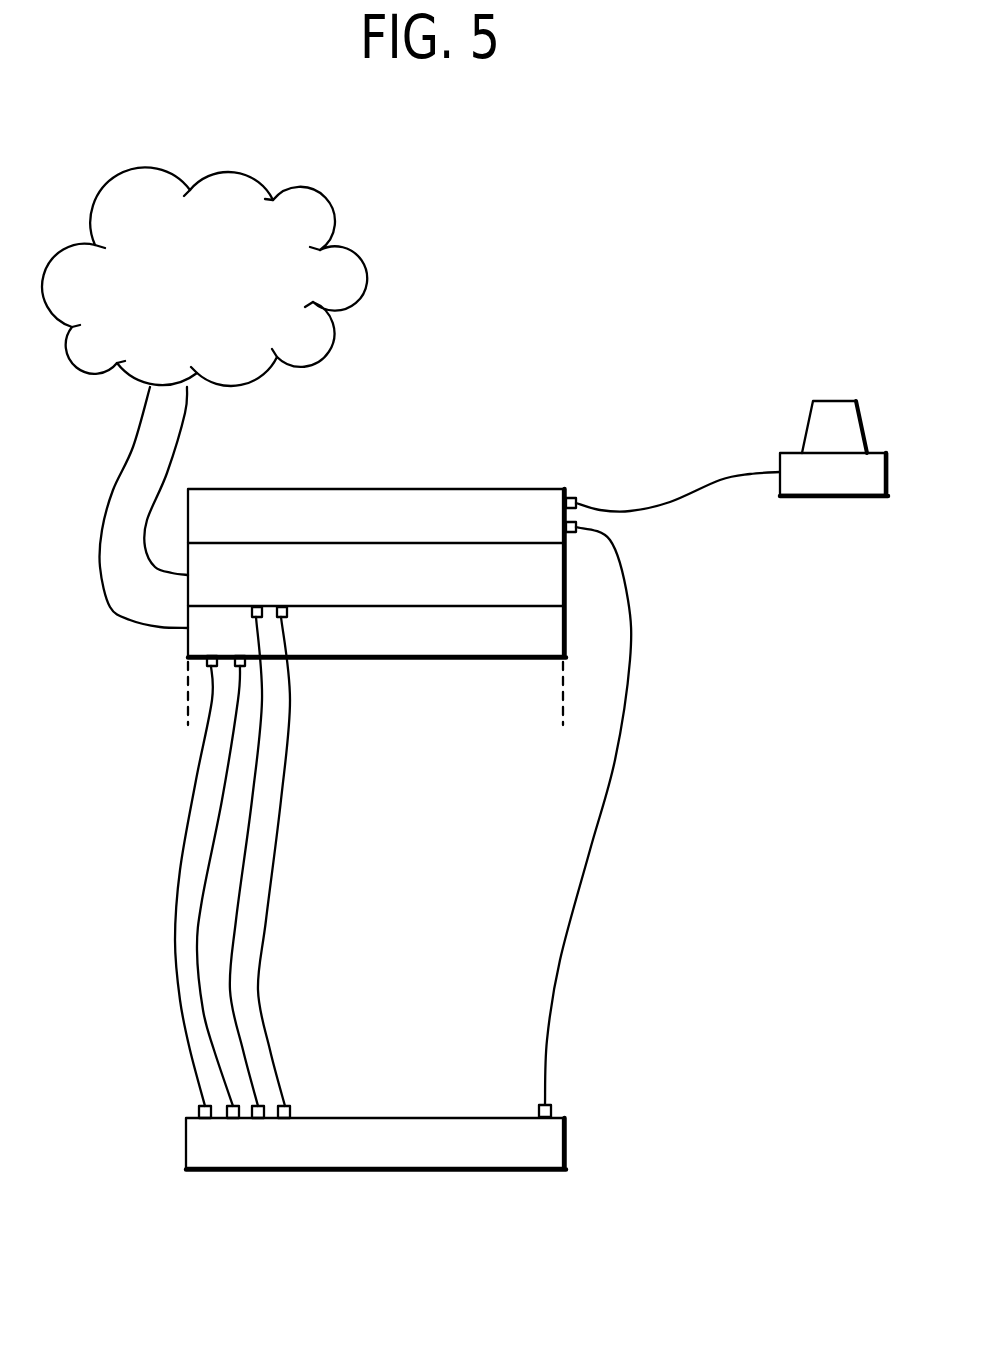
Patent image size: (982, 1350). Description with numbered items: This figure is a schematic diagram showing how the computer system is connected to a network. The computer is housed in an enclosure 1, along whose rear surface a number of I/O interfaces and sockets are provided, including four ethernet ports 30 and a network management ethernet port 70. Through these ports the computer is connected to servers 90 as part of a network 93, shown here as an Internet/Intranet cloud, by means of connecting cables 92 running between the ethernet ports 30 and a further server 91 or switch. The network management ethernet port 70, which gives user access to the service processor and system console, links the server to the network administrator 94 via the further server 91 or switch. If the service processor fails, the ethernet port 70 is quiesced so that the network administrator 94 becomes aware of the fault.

The enclosure 1 is at (358, 1152).
The ethernet ports 30 is at (200, 1107).
The network management ethernet port 70 is at (551, 1110).
The servers 90 is at (367, 588).
The further server 91 is at (390, 488).
The connecting cables 92 is at (177, 885).
The network 93 is at (372, 288).
The network administrator 94 is at (835, 400).